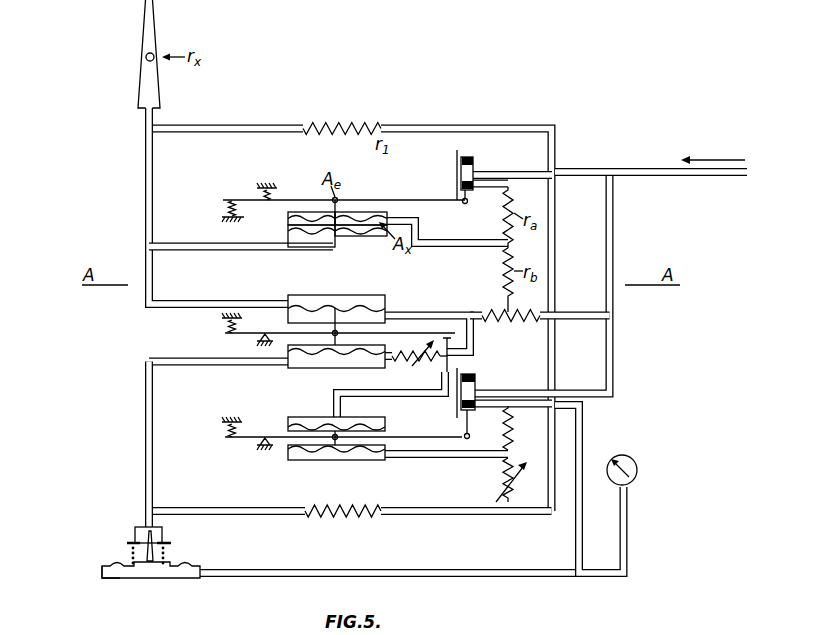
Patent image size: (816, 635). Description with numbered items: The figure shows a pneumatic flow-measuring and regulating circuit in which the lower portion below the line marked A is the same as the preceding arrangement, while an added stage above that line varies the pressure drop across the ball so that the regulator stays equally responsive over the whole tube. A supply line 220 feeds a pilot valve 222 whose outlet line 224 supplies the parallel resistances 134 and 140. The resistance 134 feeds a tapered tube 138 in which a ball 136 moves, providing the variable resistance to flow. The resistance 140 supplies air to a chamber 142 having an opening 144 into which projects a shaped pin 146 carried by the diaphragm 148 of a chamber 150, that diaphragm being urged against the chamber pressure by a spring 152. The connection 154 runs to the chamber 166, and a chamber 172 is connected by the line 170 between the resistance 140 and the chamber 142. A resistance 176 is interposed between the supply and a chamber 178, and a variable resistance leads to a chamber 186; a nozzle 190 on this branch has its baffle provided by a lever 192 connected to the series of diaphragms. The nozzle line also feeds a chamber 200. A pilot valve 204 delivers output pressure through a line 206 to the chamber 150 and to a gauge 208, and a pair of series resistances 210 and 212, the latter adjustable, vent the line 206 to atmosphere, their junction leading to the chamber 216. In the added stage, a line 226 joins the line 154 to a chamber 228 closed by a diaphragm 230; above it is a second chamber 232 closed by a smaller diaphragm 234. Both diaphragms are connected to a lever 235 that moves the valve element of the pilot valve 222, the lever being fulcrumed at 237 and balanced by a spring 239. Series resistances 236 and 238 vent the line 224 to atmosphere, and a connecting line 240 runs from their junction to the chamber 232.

The resistance 134 is at (357, 119).
The ball 136 is at (146, 56).
The tapered tube 138 is at (137, 92).
The resistance 140 is at (347, 507).
The chamber 142 is at (162, 535).
The opening 144 is at (140, 532).
The pin 146 is at (154, 555).
The diaphragm 148 is at (121, 571).
The chamber 150 is at (166, 577).
The spring 152 is at (130, 550).
The connection 154 is at (153, 178).
The chamber 166 is at (356, 300).
The line 170 is at (148, 433).
The chamber 172 is at (300, 363).
The resistance 176 is at (516, 323).
The chamber 178 is at (386, 318).
The chamber 186 is at (289, 352).
The nozzle 190 is at (449, 340).
The lever 192 is at (416, 334).
The chamber 200 is at (382, 423).
The pilot valve 204 is at (478, 392).
The line 206 is at (584, 449).
The gauge 208 is at (639, 464).
The resistance 210 is at (513, 430).
The adjustable resistance 212 is at (513, 487).
The chamber 216 is at (386, 455).
The supply line 220 is at (652, 174).
The pilot valve 222 is at (478, 161).
The line 224 is at (524, 188).
The line 226 is at (223, 245).
The chamber 228 is at (308, 237).
The diaphragm 230 is at (368, 229).
The second chamber 232 is at (293, 216).
The diaphragm 234 is at (352, 211).
The lever 235 is at (412, 199).
The resistance 236 is at (504, 219).
The fulcrum 237 is at (276, 198).
The resistance 238 is at (504, 270).
The spring 239 is at (228, 208).
The connecting line 240 is at (418, 246).